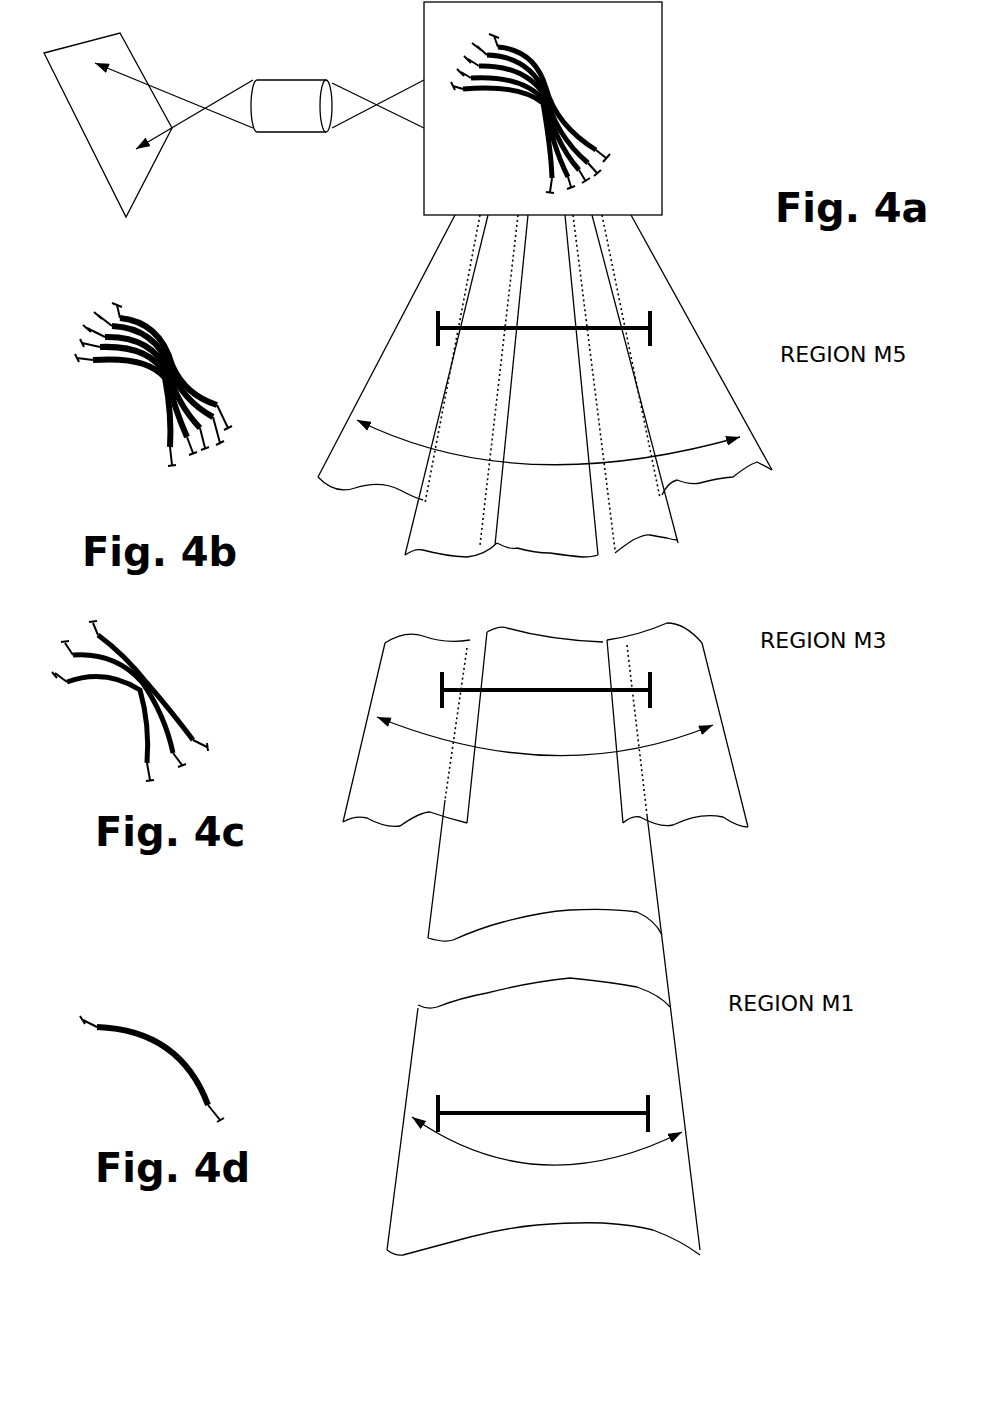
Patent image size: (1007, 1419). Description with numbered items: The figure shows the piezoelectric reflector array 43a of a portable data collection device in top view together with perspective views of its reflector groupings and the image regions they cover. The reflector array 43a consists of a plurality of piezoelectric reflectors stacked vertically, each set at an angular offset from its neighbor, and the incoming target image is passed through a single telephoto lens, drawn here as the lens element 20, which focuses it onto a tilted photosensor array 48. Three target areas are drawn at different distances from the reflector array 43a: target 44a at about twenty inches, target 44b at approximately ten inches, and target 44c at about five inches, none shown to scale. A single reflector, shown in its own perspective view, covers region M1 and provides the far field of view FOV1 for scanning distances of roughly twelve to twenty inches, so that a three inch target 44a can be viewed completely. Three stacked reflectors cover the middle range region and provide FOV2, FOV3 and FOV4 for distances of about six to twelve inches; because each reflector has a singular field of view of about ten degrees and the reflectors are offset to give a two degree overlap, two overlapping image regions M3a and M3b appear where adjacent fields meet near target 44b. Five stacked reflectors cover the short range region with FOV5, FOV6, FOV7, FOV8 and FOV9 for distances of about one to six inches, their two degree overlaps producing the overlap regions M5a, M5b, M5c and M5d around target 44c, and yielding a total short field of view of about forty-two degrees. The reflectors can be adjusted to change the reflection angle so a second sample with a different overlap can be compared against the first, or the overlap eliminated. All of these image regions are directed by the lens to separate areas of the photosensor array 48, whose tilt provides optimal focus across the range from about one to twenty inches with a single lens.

The lens 20 is at (290, 80).
The photosensor array 48 is at (130, 190).
The piezoelectric reflector array 43a is at (662, 150).
The target 44a is at (652, 1113).
The target 44b is at (653, 693).
The target 44c is at (652, 335).
The overlap region M5a is at (442, 407).
The overlap region M5b is at (497, 398).
The overlap region M5c is at (584, 311).
The overlap region M5d is at (611, 282).
The overlapping image region M3a is at (470, 655).
The overlapping image region M3b is at (618, 657).
The field of view FOV1 is at (455, 1077).
The field of view FOV2 is at (422, 808).
The field of view FOV3 is at (483, 855).
The field of view FOV4 is at (675, 810).
The field of view FOV5 is at (388, 467).
The field of view FOV6 is at (437, 522).
The field of view FOV7 is at (558, 532).
The field of view FOV8 is at (635, 525).
The field of view FOV9 is at (712, 468).